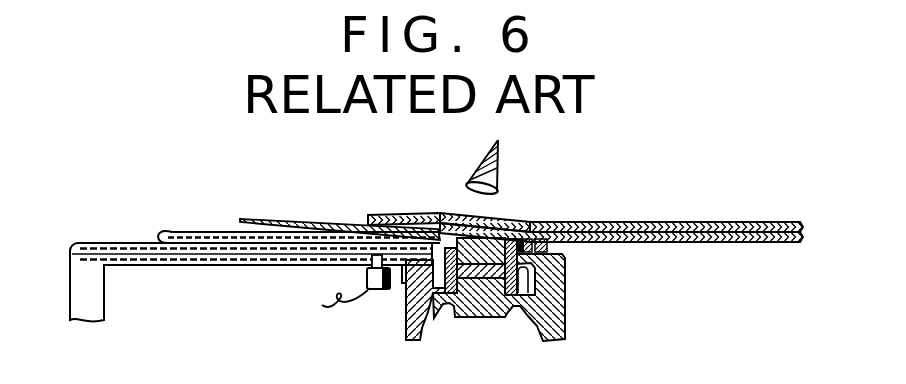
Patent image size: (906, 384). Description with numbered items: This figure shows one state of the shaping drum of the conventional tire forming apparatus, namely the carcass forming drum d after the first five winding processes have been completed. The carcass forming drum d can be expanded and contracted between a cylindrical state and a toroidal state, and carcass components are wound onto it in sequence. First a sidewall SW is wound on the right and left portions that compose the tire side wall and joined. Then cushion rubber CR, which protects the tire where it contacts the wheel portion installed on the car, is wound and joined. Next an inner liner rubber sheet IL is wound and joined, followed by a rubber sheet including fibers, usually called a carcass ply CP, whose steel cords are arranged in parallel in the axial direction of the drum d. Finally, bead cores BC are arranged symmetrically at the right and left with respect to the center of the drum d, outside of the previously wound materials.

The sidewall SW is at (287, 219).
The cushion rubber CR is at (424, 213).
The bead core BC is at (500, 158).
The carcass ply CP is at (631, 222).
The inner liner rubber sheet IL is at (706, 222).
The carcass forming drum d is at (567, 312).